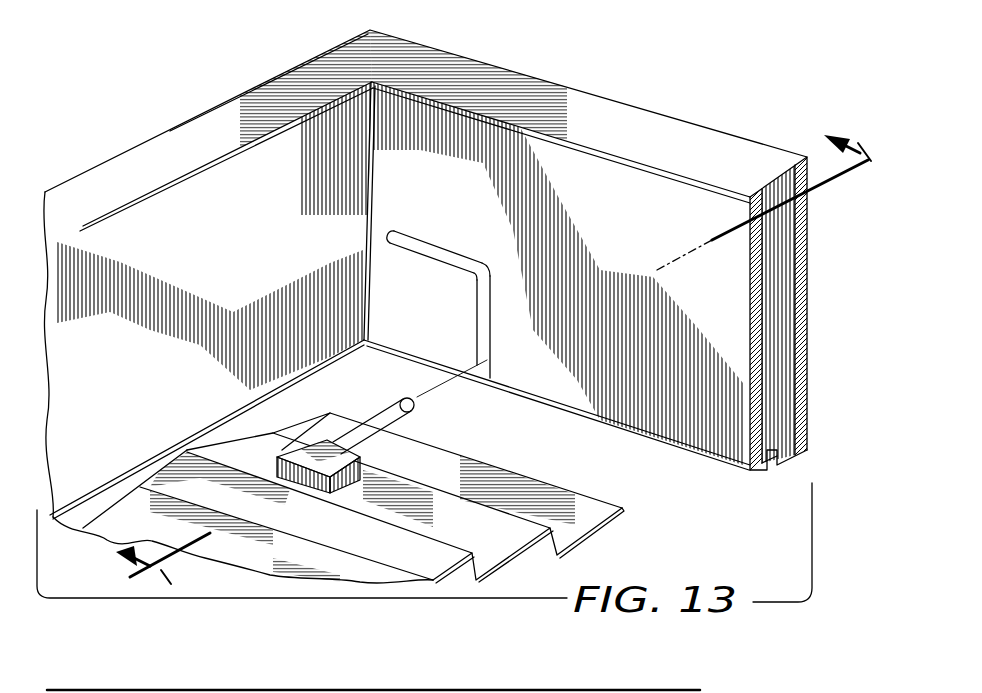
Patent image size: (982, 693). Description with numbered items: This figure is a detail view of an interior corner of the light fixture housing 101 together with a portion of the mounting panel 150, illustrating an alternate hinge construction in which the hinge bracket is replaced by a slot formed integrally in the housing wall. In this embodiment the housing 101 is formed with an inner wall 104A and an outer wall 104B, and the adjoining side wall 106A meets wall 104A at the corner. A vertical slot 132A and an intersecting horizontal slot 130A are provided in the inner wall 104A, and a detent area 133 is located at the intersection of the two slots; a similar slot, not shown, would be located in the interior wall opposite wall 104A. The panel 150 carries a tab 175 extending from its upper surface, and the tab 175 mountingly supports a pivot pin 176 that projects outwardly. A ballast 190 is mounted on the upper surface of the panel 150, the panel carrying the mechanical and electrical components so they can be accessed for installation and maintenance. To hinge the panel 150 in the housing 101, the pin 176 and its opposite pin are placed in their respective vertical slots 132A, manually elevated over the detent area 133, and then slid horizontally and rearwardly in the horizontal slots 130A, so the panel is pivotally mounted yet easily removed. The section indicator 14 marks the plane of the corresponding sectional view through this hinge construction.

The housing 101 is at (591, 84).
The inner wall 104A is at (749, 289).
The outer wall 104B is at (808, 161).
The side wall 106A is at (255, 241).
The horizontal slot 130A is at (425, 237).
The vertical slot 132A is at (491, 352).
The detent area 133 is at (490, 256).
The mounting panel 150 is at (363, 540).
The tab 175 is at (323, 442).
The pivot pin 176 is at (414, 408).
The ballast 190 is at (243, 516).
The section line 14- 14 is at (502, 362).